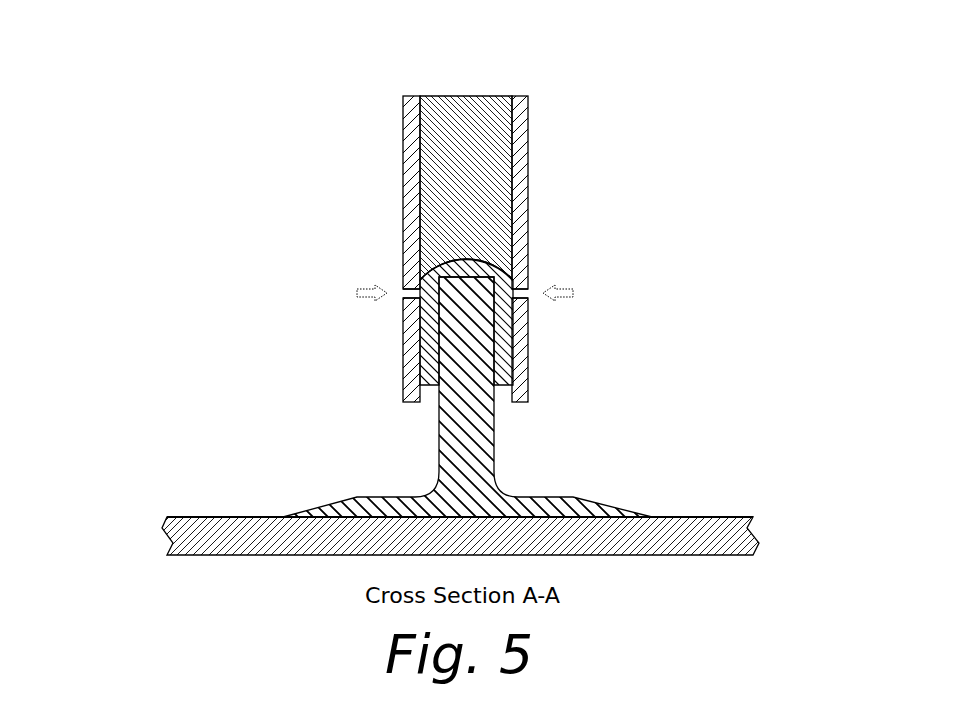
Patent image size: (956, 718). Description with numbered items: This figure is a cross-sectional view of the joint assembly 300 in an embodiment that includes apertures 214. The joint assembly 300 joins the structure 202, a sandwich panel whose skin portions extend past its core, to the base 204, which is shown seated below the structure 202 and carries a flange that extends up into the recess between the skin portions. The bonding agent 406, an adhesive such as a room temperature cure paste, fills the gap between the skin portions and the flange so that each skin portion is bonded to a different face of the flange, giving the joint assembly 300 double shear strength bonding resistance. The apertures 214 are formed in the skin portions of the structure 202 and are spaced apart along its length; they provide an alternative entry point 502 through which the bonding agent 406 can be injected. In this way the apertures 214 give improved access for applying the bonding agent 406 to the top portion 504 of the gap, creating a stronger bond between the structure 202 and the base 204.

The joint assembly 300 is at (137, 73).
The structure 202 is at (560, 119).
The base 204 is at (614, 484).
The apertures 214 is at (400, 284).
The bonding agent 406 is at (421, 345).
The alternative entry point 502 is at (356, 291).
The top portion of the gap 504 is at (476, 261).